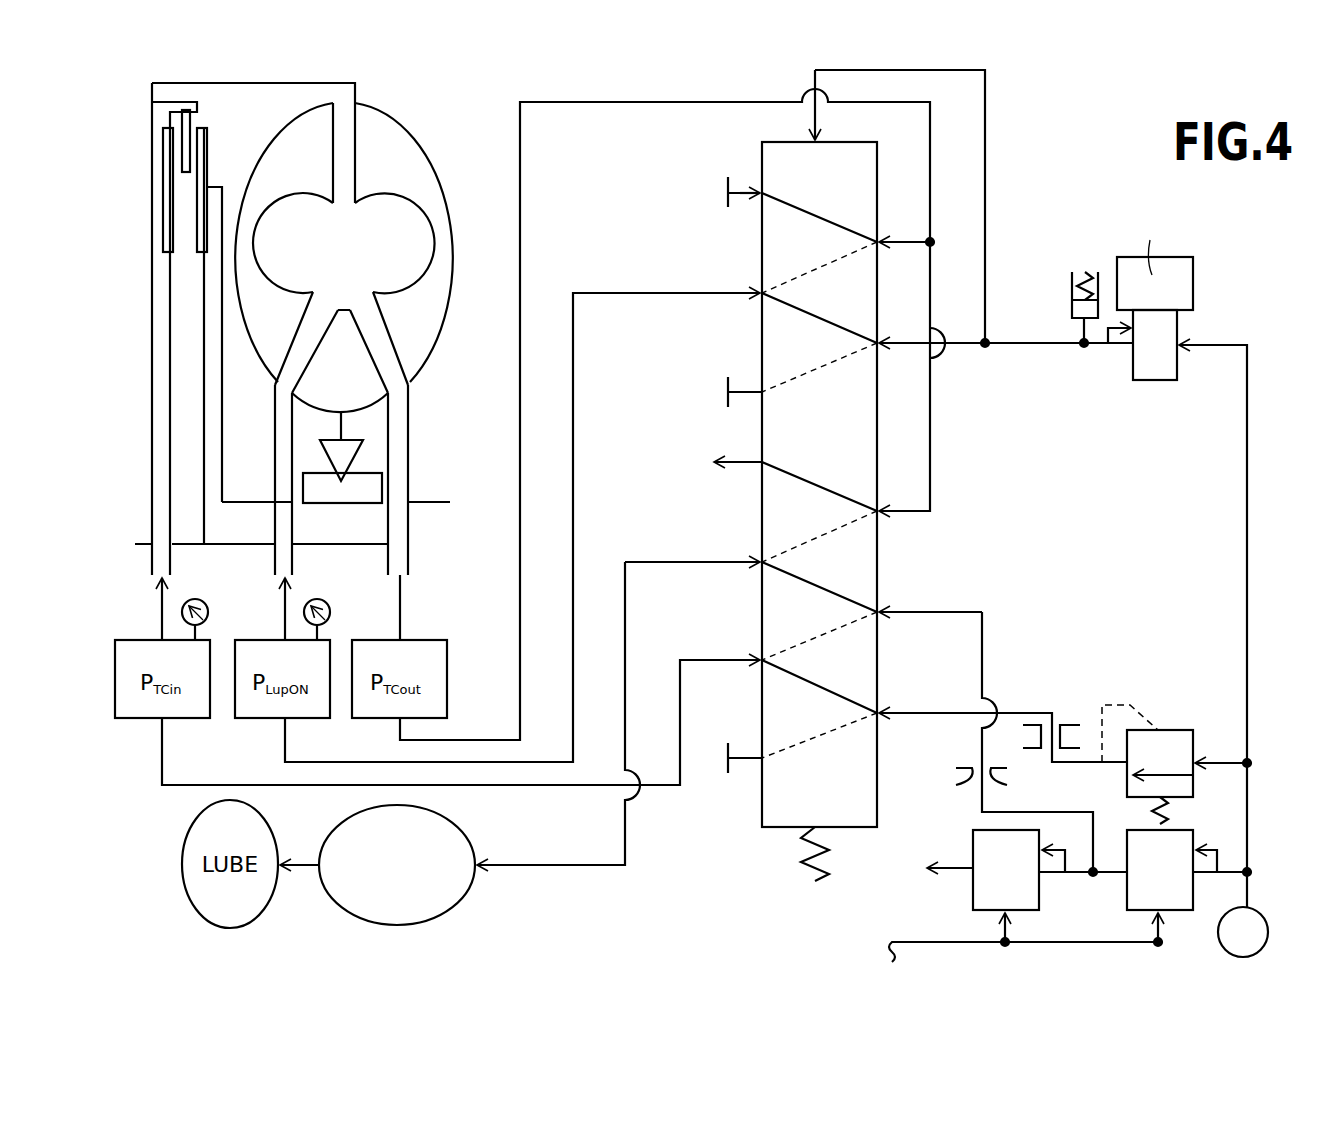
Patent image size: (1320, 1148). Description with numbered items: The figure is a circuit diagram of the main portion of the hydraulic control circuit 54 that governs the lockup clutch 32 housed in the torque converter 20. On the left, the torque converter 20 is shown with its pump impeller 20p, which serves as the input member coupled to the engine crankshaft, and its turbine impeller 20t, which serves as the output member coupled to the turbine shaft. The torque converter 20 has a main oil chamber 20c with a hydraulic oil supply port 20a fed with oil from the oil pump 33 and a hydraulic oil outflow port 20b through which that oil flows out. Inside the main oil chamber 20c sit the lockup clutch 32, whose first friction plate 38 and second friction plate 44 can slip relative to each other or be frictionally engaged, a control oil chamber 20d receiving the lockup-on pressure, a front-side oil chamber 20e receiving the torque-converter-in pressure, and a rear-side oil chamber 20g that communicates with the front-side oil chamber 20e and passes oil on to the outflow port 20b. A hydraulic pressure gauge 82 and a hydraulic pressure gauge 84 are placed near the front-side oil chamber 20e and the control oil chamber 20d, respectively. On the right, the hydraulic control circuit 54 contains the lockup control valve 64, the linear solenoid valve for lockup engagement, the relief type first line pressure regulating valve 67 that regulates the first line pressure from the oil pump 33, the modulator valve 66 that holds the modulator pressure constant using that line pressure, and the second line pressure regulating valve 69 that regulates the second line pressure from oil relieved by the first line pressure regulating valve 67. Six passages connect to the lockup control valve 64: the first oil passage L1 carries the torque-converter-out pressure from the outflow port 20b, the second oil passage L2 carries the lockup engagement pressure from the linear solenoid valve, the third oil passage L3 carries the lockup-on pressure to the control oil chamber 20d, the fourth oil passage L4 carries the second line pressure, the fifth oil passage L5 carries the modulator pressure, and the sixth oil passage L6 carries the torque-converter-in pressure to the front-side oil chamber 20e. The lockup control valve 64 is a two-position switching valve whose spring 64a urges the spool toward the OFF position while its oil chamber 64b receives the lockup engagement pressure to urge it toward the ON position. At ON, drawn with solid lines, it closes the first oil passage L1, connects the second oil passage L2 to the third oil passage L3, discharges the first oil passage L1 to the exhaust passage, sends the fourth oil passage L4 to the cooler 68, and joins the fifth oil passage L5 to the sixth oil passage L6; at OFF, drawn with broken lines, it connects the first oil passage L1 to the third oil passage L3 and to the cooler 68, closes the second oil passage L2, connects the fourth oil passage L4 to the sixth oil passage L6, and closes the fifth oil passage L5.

The torque converter 20 is at (389, 85).
The lockup clutch 32 is at (142, 131).
The main oil chamber 20c is at (238, 98).
The second friction plate 44 is at (192, 118).
The first friction plate 38 is at (165, 252).
The pump impeller 20p is at (405, 175).
The rear-side oil chamber 20g is at (367, 262).
The turbine impeller 20t is at (267, 330).
The front-side oil chamber 20e is at (162, 385).
The control oil chamber 20d is at (243, 520).
The hydraulic oil supply port 20a is at (163, 560).
The hydraulic oil outflow port 20b is at (400, 556).
The hydraulic pressure gauge 82 is at (208, 607).
The hydraulic pressure gauge 84 is at (330, 607).
The cooler 68 is at (433, 828).
The hydraulic control circuit 54 is at (1022, 73).
The lockup control valve 64 is at (768, 155).
The spring 64a is at (803, 862).
The oil chamber 64b is at (818, 155).
The modulator valve 66 is at (1168, 748).
The first line pressure regulating valve 67 is at (1172, 845).
The second line pressure regulating valve 69 is at (988, 858).
The oil pump 33 is at (1252, 920).
The first oil passage L1 is at (575, 103).
The second oil passage L2 is at (968, 348).
The third oil passage L3 is at (613, 295).
The fourth oil passage L4 is at (948, 610).
The fifth oil passage L5 is at (1027, 712).
The sixth oil passage L6 is at (702, 658).